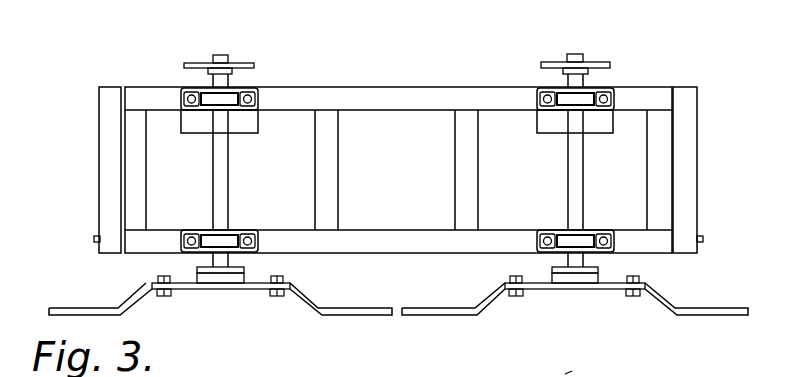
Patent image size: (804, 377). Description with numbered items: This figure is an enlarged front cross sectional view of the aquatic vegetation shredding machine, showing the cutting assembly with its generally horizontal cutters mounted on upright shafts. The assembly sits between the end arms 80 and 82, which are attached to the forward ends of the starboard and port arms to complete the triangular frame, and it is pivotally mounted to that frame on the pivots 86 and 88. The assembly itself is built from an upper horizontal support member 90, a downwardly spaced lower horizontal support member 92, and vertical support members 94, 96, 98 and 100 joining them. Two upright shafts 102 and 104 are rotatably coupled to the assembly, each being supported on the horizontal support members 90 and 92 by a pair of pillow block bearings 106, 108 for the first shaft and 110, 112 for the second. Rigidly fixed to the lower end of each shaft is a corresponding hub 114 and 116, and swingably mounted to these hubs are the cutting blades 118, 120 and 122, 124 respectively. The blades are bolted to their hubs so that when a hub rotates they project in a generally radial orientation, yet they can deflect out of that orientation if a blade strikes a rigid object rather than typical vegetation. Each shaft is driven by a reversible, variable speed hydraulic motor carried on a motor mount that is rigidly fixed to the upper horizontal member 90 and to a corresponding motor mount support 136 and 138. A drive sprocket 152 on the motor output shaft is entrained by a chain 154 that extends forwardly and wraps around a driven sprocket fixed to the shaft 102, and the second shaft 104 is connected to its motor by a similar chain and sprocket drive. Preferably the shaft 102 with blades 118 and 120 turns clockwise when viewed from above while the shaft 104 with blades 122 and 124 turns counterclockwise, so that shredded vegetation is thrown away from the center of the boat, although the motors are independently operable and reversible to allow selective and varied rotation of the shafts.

The end arm 80 is at (108, 118).
The end arm 82 is at (686, 145).
The pivot 86 is at (94, 240).
The pivot 88 is at (703, 240).
The upper horizontal support member 90 is at (365, 98).
The lower horizontal support member 92 is at (367, 238).
The vertical support member 94 is at (133, 162).
The vertical support member 96 is at (325, 138).
The vertical support member 98 is at (463, 136).
The vertical support member 100 is at (658, 143).
The upright shaft 102 is at (220, 163).
The upright shaft 104 is at (573, 154).
The pillow block bearing 106 is at (223, 238).
The pillow block bearing 108 is at (247, 97).
The pillow block bearing 110 is at (573, 242).
The pillow block bearing 112 is at (568, 97).
The hub 114 is at (217, 273).
The hub 116 is at (575, 273).
The cutting blade 118 is at (95, 308).
The cutting blade 120 is at (335, 308).
The cutting blade 122 is at (458, 308).
The cutting blade 124 is at (693, 306).
The motor mount support 136 is at (190, 123).
The motor mount support 138 is at (603, 120).
The drive sprocket 152 is at (565, 374).
The chain 154 is at (237, 63).